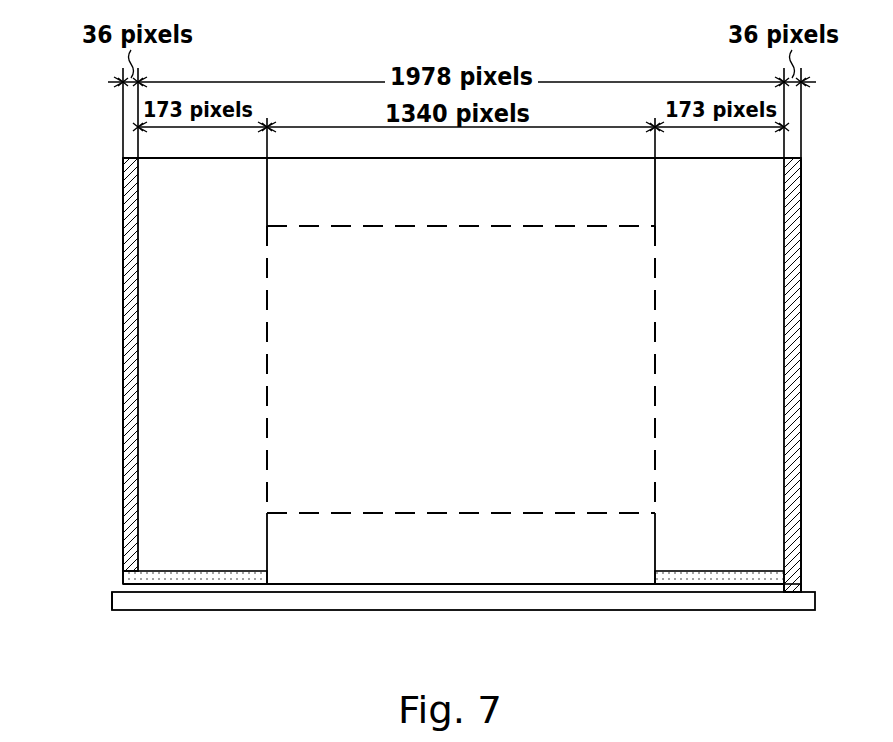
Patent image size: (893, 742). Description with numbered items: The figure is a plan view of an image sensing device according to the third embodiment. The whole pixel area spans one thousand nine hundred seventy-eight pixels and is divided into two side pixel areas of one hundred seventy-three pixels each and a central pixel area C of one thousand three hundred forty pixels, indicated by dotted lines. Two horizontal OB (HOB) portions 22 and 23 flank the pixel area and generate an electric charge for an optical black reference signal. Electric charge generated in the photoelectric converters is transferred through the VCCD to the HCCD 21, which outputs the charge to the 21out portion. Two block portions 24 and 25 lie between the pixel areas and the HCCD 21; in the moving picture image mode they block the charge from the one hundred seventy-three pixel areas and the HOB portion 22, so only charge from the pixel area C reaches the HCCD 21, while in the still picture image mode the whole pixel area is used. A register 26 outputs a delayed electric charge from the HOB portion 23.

The HCCD 21 is at (672, 600).
The 21out portion 21out is at (112, 600).
The horizontal OB (HOB) portion 22 is at (133, 386).
The horizontal OB (HOB) portion 23 is at (792, 397).
The block portion 24 is at (236, 578).
The block portion 25 is at (748, 580).
The register 26 is at (800, 593).
The pixel area C is at (583, 343).